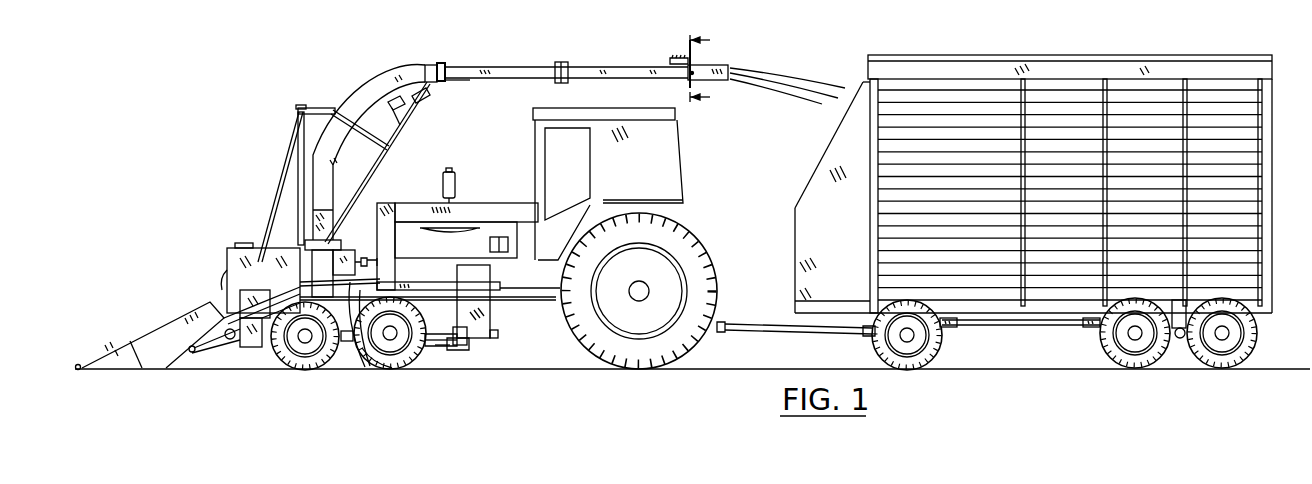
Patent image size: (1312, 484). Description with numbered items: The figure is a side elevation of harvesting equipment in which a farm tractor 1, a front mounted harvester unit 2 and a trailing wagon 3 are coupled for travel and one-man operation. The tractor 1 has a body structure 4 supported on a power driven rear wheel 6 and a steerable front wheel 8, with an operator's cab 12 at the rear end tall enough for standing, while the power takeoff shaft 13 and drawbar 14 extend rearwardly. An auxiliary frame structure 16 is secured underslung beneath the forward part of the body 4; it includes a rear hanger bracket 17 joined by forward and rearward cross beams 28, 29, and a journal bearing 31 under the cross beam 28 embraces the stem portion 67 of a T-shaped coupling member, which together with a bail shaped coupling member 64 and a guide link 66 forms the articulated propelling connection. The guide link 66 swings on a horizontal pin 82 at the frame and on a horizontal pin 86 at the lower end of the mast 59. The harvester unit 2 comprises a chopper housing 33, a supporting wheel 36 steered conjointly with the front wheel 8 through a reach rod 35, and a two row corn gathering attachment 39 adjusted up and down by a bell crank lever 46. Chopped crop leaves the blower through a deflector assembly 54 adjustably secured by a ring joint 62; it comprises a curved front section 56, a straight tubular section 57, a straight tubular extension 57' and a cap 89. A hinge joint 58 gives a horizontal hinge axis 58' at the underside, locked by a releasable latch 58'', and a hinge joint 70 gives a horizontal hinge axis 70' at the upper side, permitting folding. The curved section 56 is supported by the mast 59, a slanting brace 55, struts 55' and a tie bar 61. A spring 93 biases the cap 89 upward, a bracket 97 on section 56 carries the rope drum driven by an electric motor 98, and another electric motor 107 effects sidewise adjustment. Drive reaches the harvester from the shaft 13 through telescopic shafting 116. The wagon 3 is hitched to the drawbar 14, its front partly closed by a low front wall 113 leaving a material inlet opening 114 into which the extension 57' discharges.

The farm tractor 1 is at (513, 191).
The front mounted harvester unit 2 is at (217, 265).
The trailing wagon 3 is at (824, 139).
The body structure 4 is at (527, 289).
The rear wheel 6 is at (718, 300).
The front wheel 8 is at (406, 358).
The operator's cab 12 is at (661, 160).
The power takeoff shaft 13 is at (717, 68).
The drawbar 14 is at (720, 330).
The auxiliary frame structure 16 is at (496, 346).
The left rear hanger bracket 17 is at (490, 314).
The forward cross beam 28 is at (456, 328).
The rearward cross beam 29 is at (499, 334).
The journal bearing 31 is at (458, 350).
The chopper housing 33 is at (232, 250).
The reach rod 35 is at (378, 358).
The supporting wheel 36 is at (302, 372).
The two row corn gathering attachment 39 is at (161, 323).
The bell crank lever 46 is at (202, 353).
The deflector assembly 54 is at (546, 61).
The slanting brace 55 is at (377, 163).
The strut 55' is at (359, 95).
The curved front section 56 is at (365, 88).
The straight tubular section 57 is at (519, 85).
The straight tubular extension 57' is at (626, 51).
The hinge joint 58 is at (441, 54).
The horizontal hinge axis 58' is at (477, 97).
The releasable latch 58'' is at (469, 43).
The mast 59 is at (298, 160).
The tie bar 61 is at (318, 106).
The ring joint 62 is at (345, 261).
The bail shaped coupling member 64 is at (346, 355).
The guide link 66 is at (355, 358).
The stem portion 67 is at (439, 348).
The hinge joint 70 is at (574, 81).
The horizontal hinge axis 70' is at (577, 47).
The horizontal pin 82 is at (398, 285).
The horizontal pin 86 is at (307, 273).
The cap 89 is at (731, 63).
The spring 93 is at (683, 58).
The bracket 97 is at (405, 99).
The electric motor 98 is at (422, 91).
The electric motor 107 is at (397, 125).
The low front wall 113 is at (795, 241).
The material inlet opening 114 is at (810, 168).
The telescopic shafting 116 is at (376, 242).